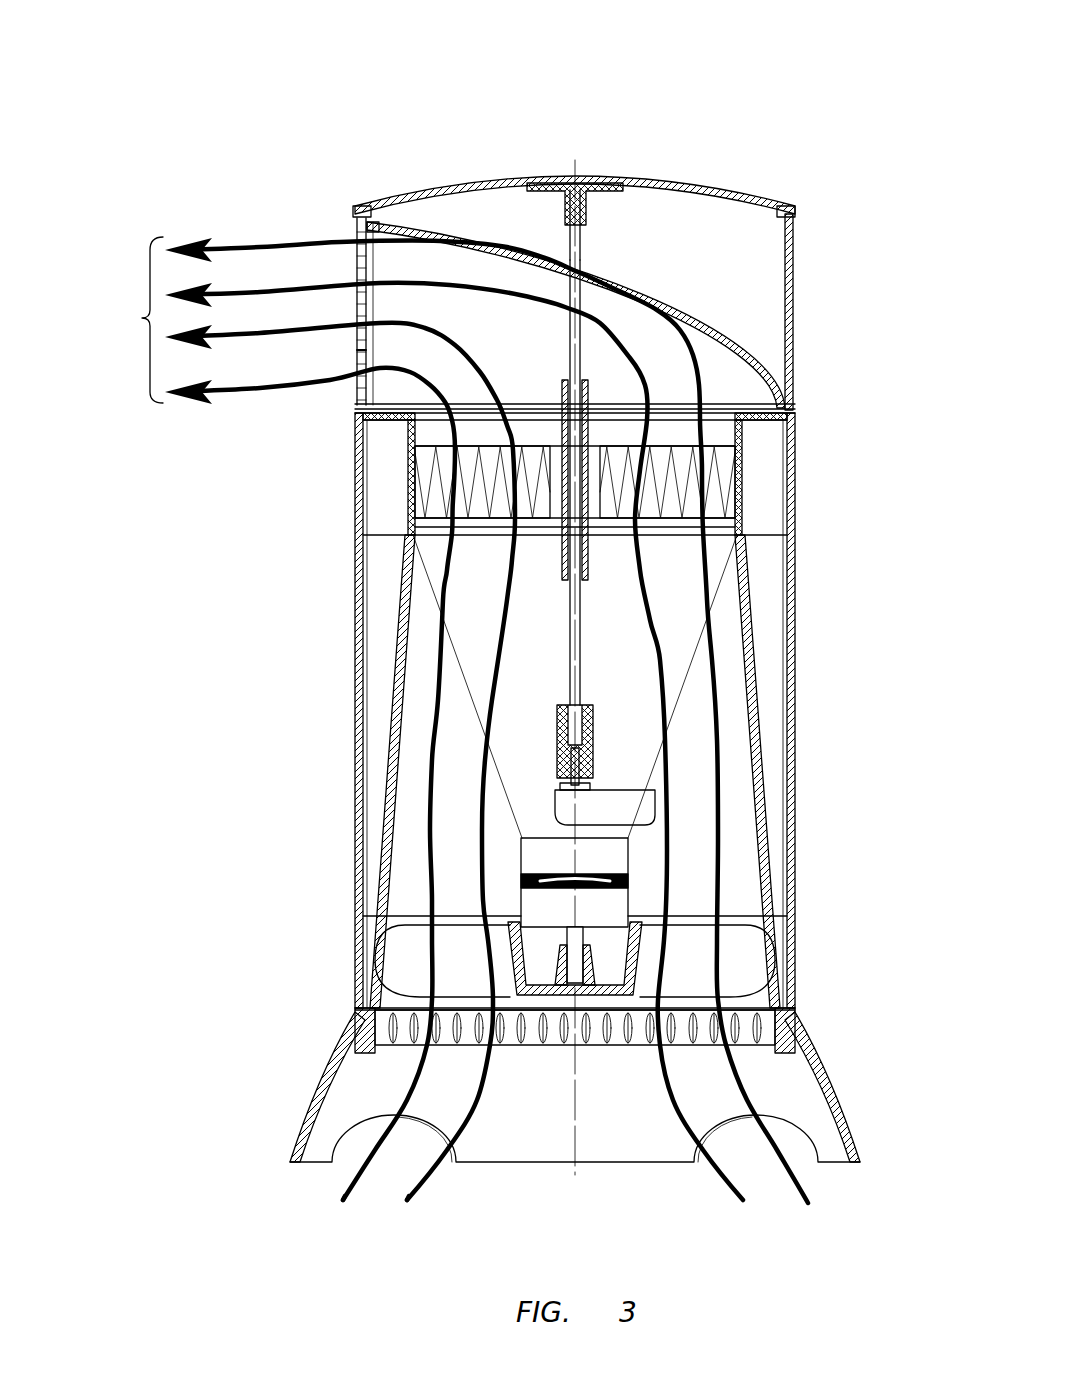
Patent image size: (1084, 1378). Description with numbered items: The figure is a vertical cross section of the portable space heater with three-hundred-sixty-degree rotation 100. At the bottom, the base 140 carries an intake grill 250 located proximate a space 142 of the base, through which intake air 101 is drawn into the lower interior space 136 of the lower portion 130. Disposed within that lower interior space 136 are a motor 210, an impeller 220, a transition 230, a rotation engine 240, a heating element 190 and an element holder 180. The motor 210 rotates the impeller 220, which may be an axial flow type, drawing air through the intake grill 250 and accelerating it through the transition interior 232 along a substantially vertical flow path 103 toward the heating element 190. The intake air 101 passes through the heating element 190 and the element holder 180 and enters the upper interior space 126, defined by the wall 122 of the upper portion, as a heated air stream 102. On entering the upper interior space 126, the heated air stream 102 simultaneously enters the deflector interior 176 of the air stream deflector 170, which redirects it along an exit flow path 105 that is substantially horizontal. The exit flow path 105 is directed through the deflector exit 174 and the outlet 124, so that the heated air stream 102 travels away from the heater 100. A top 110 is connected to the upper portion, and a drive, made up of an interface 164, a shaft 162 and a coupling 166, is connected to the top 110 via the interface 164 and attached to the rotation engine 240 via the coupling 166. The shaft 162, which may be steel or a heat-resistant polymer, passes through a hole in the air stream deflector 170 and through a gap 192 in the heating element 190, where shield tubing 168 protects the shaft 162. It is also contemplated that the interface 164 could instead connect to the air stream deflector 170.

The portable space heater with 360° rotation 100 is at (220, 72).
The intake air 101 is at (355, 1183).
The heated air stream 102 is at (142, 318).
The substantially vertical flow path 103 is at (428, 783).
The exit flow path 105 is at (452, 285).
The top 110 is at (703, 183).
The wall 122 is at (800, 375).
The outlet 124 is at (360, 347).
The upper interior space 126 is at (755, 290).
The lower portion 130 is at (798, 622).
The lower interior space 136 is at (770, 580).
The base 140 is at (325, 1067).
The space 142 is at (360, 1086).
The shaft 162 is at (572, 640).
The interface 164 is at (600, 208).
The coupling 166 is at (593, 733).
The shield tubing 168 is at (563, 553).
The air stream deflector 170 is at (768, 330).
The deflector exit 174 is at (367, 262).
The deflector interior 176 is at (500, 273).
The element holder 180 is at (763, 423).
The heating element 190 is at (717, 520).
The gap 192 is at (557, 477).
The motor 210 is at (628, 862).
The impeller 220 is at (643, 935).
The transition 230 is at (770, 697).
The transition interior 232 is at (408, 858).
The rotation engine 240 is at (653, 793).
The intake grill 250 is at (750, 1045).